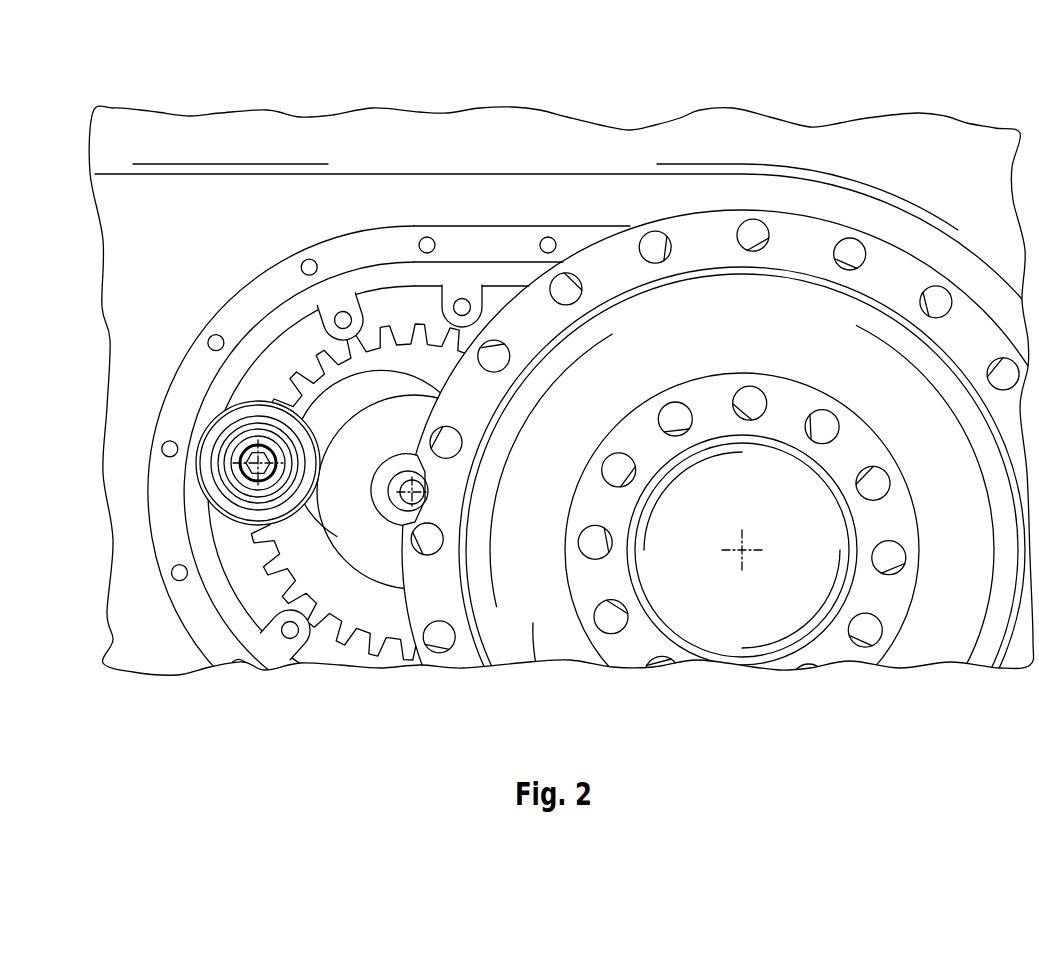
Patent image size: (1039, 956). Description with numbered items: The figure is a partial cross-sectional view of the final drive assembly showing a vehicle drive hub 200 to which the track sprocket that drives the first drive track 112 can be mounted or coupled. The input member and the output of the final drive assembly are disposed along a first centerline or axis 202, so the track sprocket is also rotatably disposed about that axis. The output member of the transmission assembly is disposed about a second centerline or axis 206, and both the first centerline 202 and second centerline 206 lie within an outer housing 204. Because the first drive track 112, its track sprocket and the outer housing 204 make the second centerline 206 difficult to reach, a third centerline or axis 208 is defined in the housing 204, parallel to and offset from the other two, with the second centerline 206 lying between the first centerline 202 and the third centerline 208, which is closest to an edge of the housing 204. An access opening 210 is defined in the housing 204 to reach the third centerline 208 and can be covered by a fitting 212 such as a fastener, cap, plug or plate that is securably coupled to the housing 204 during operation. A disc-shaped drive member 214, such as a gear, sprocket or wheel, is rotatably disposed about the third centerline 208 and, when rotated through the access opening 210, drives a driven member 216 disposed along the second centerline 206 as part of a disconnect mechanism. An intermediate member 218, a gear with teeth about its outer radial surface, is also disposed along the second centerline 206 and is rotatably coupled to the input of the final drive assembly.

The first drive track 112 is at (223, 133).
The vehicle drive hub 200 is at (535, 623).
The first centerline 202 is at (742, 550).
The outer housing 204 is at (490, 245).
The second centerline 206 is at (410, 503).
The third centerline 208 is at (232, 478).
The access opening 210 is at (232, 457).
The fitting 212 is at (232, 458).
The drive member 214 is at (241, 528).
The driven member 216 is at (394, 430).
The intermediate member 218 is at (334, 642).